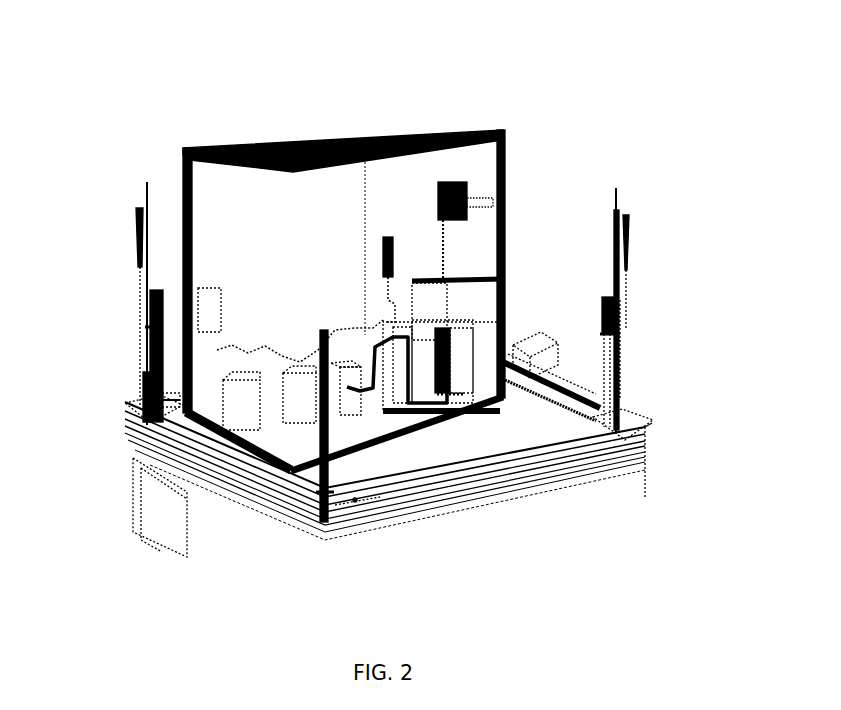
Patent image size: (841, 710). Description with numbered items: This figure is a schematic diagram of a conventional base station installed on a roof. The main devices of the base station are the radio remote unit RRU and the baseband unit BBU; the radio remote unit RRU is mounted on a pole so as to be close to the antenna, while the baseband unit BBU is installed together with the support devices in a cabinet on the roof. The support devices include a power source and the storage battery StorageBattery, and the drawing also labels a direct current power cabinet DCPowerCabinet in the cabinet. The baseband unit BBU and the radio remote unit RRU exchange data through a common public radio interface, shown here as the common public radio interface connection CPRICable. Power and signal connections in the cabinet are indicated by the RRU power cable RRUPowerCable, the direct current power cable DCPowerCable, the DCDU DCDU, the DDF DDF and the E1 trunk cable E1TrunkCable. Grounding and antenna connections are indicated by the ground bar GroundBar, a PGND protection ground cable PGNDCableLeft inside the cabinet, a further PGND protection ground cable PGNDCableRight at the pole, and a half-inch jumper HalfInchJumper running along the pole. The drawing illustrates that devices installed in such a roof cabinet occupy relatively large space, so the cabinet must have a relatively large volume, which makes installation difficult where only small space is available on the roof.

The ground bar GroundBar is at (383, 260).
The PGND protection ground cable PGNDCableLeft is at (383, 297).
The direct current power cable DCPowerCable is at (352, 328).
The RRU power cable RRUPowerCable is at (443, 253).
The common public radio interface CPRICable is at (460, 270).
The element DCDU is at (440, 340).
The baseband unit BBU is at (455, 318).
The E1 trunk cable E1TrunkCable is at (383, 377).
The element DDF is at (349, 372).
The direct current power cabinet DCPowerCabinet is at (297, 404).
The storage battery StorageBattery is at (253, 415).
The radio remote unit RRU is at (598, 316).
The PGND protection ground cable PGNDCableRight is at (592, 365).
The 1/2 inch jumper HalfInchJumper is at (620, 353).